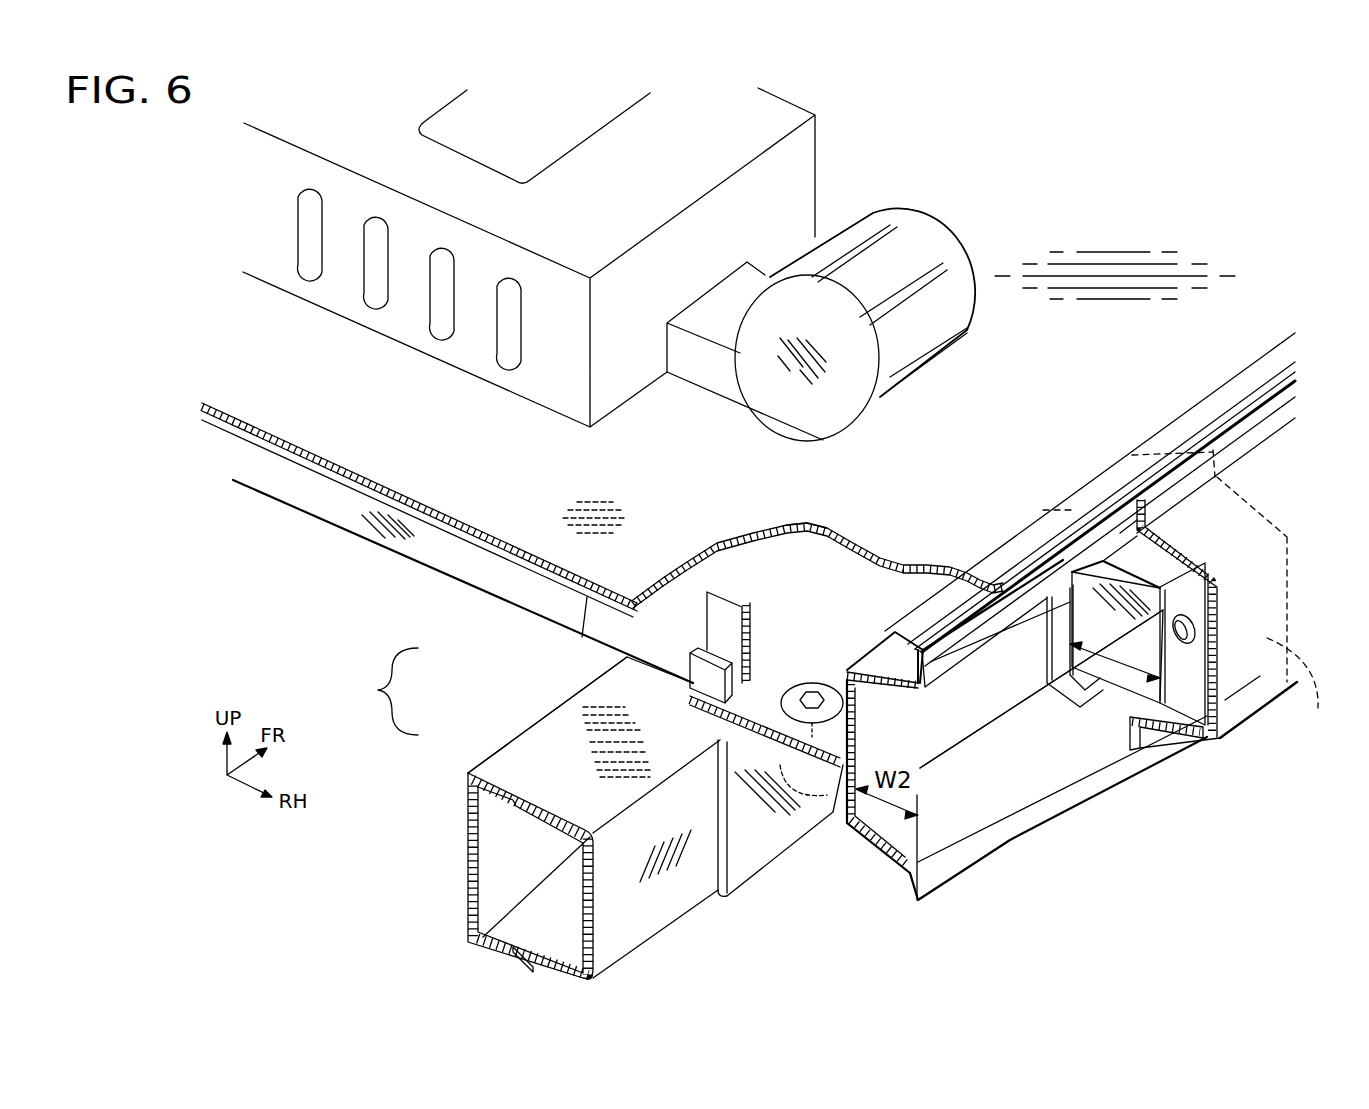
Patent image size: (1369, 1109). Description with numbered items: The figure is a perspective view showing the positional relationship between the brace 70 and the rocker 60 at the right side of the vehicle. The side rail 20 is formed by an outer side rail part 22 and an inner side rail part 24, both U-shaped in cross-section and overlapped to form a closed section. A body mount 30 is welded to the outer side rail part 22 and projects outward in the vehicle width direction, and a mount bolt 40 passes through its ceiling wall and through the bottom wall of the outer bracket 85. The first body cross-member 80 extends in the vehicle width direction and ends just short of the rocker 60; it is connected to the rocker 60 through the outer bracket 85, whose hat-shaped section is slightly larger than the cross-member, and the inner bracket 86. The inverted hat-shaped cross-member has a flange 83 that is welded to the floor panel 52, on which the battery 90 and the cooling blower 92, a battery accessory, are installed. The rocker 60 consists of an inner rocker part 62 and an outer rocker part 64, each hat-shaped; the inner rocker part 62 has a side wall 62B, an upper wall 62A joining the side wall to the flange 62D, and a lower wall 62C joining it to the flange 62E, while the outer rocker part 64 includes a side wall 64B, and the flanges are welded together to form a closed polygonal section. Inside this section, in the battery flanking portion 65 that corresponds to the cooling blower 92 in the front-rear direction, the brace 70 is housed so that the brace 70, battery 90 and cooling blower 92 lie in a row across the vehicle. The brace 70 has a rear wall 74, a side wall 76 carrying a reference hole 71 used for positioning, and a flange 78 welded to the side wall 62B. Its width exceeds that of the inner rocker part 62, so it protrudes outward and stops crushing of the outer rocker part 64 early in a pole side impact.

The side rail 20 is at (374, 691).
The outer side rail part 22 is at (583, 803).
The inner side rail part 24 is at (568, 727).
The body mount 30 is at (745, 838).
The mount bolt 40 is at (838, 680).
The floor panel 52 is at (1112, 233).
The rocker 60 is at (1187, 445).
The inner rocker part 62 is at (1010, 833).
The upper wall 62A is at (897, 689).
The side wall 62B is at (987, 693).
The lower wall 62C is at (880, 835).
The flange 62D is at (943, 660).
The flange 62E is at (960, 860).
The outer rocker part 64 is at (1263, 708).
The side wall 64B is at (1230, 700).
The battery flanking portion 65 is at (1301, 693).
The brace 70 is at (1198, 732).
The reference hole 71 is at (1196, 628).
The rear wall 74 is at (1093, 672).
The side wall 76 is at (1178, 597).
The flange 78 is at (1047, 667).
The first body cross-member 80 is at (473, 570).
The flange 83 is at (583, 628).
The outer bracket 85 is at (707, 688).
The inner bracket 86 is at (905, 585).
The battery 90 is at (817, 175).
The cooling blower 92 is at (900, 252).